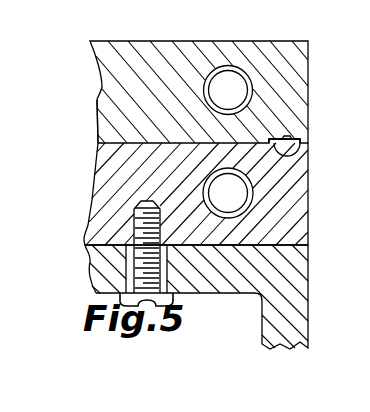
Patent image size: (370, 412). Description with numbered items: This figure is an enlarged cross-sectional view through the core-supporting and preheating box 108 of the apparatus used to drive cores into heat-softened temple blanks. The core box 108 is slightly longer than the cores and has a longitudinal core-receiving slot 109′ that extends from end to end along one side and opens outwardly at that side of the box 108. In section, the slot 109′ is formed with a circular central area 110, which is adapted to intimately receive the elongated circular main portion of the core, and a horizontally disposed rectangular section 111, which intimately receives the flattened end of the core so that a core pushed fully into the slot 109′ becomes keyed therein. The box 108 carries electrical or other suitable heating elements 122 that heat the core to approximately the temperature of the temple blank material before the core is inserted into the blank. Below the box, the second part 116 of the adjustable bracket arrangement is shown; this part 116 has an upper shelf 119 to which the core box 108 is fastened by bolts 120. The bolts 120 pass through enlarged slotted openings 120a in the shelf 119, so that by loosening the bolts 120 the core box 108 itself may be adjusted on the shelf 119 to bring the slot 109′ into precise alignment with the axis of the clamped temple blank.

The core-supporting and preheating box 108 is at (88, 101).
The heating elements 122 is at (238, 73).
The core-receiving slot 109′ is at (278, 126).
The circular central area 110 is at (300, 141).
The rectangular section 111 is at (299, 156).
The upper shelf 119 is at (198, 285).
The second part 116 is at (268, 329).
The bolts 120 is at (165, 268).
The enlarged slotted openings 120a is at (93, 277).